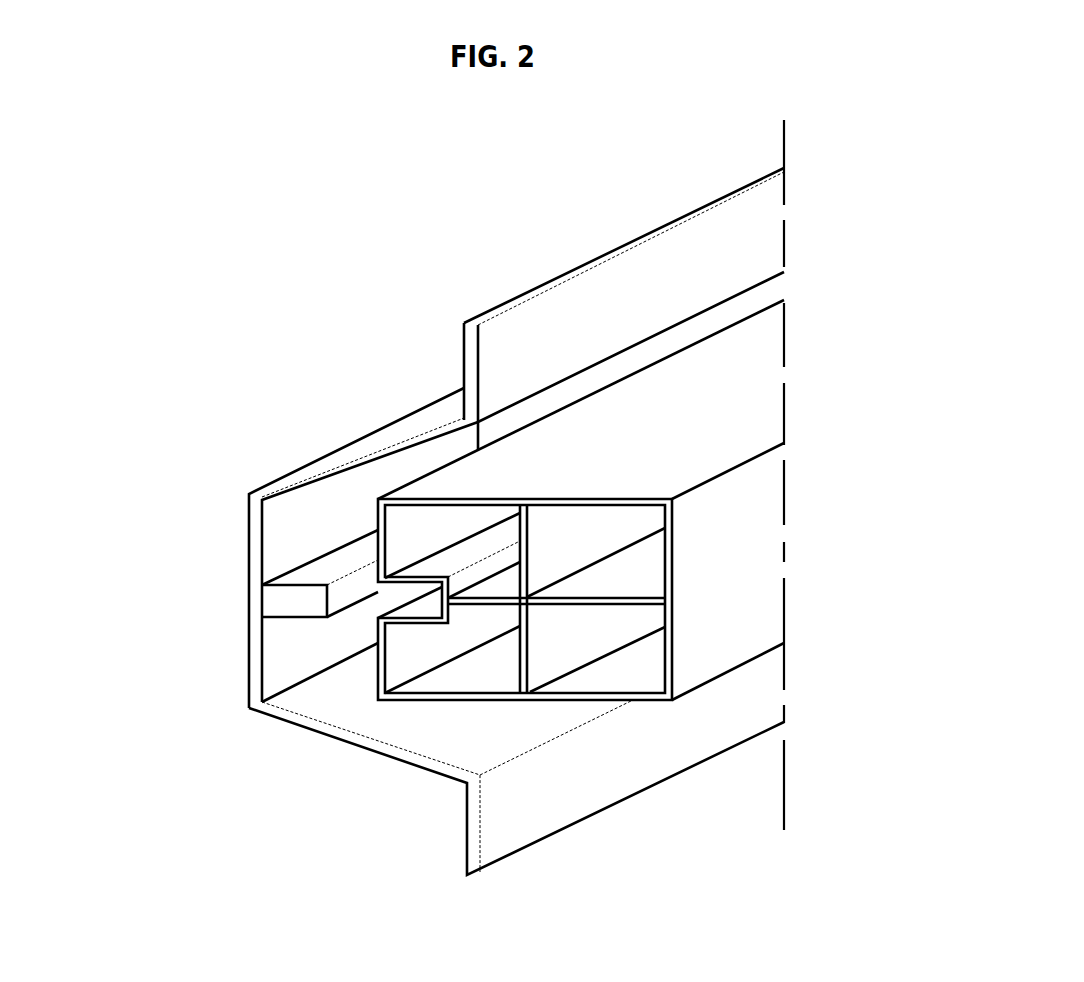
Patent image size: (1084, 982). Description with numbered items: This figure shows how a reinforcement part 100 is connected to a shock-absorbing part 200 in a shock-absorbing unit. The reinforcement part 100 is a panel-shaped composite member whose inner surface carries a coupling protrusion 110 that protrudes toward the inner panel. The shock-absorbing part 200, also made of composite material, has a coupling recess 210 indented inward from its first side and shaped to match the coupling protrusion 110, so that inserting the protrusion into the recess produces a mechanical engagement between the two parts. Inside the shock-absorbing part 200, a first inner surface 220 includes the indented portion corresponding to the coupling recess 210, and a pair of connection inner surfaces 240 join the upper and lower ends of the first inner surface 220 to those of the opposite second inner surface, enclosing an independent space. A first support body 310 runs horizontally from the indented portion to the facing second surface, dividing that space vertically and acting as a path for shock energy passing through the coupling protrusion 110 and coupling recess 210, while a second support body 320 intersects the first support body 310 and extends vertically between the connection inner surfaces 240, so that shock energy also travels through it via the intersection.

The reinforcement part 100 is at (252, 527).
The coupling protrusion 110 is at (287, 603).
The shock-absorbing part 200 is at (684, 583).
The coupling recess 210 is at (404, 588).
The first inner surface 220 is at (410, 522).
The connection inner surfaces 240 is at (478, 673).
The first support body 310 is at (618, 603).
The second support body 320 is at (518, 543).